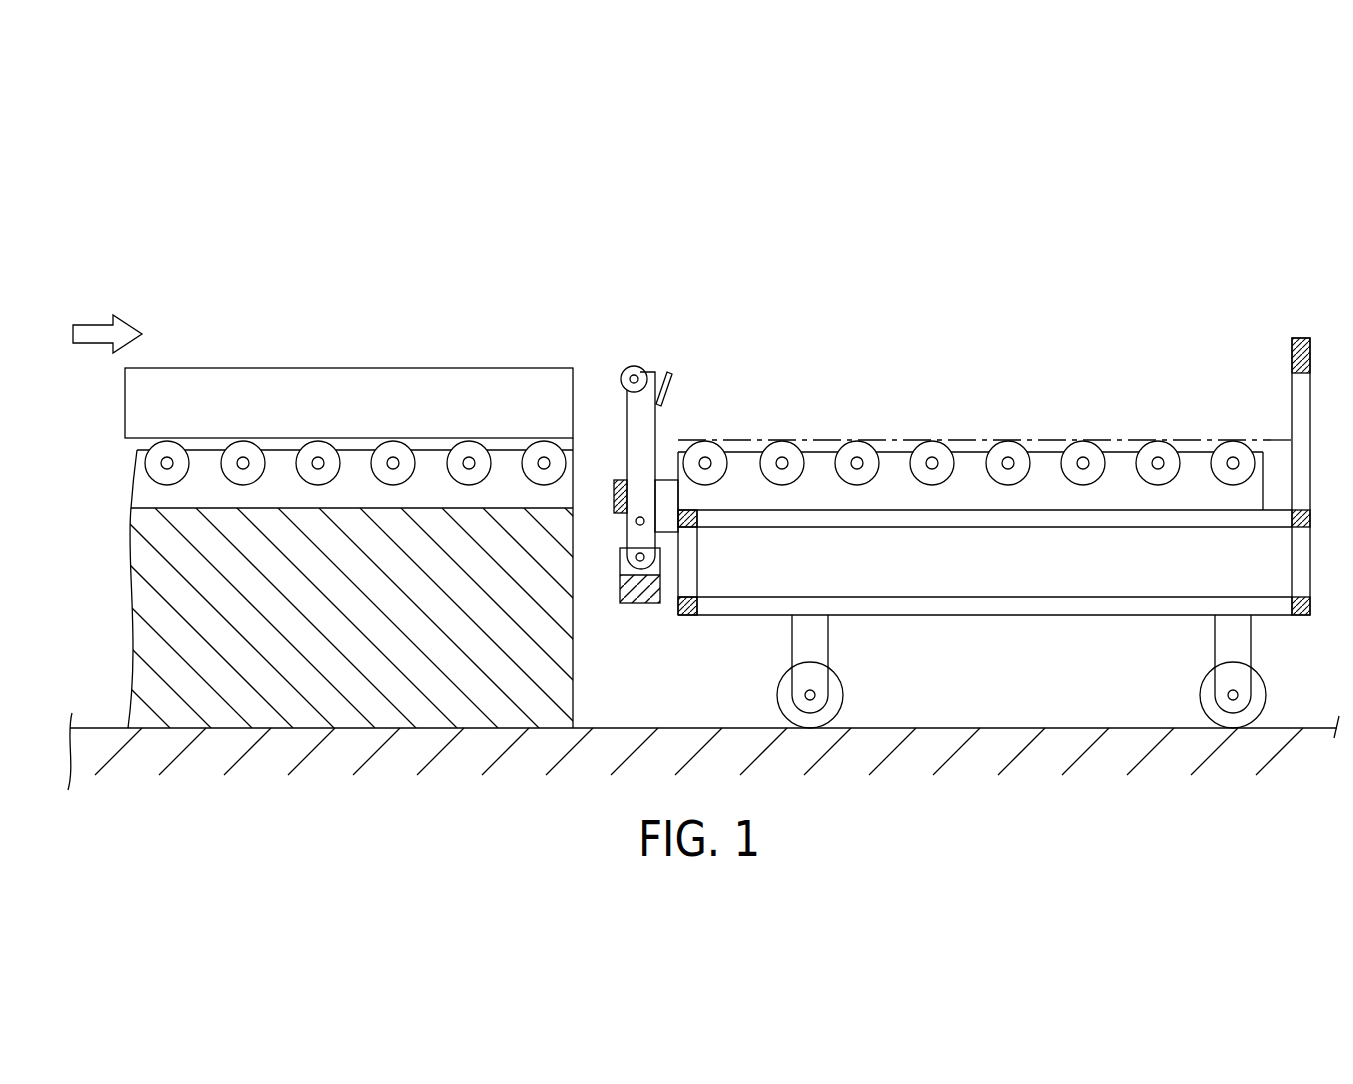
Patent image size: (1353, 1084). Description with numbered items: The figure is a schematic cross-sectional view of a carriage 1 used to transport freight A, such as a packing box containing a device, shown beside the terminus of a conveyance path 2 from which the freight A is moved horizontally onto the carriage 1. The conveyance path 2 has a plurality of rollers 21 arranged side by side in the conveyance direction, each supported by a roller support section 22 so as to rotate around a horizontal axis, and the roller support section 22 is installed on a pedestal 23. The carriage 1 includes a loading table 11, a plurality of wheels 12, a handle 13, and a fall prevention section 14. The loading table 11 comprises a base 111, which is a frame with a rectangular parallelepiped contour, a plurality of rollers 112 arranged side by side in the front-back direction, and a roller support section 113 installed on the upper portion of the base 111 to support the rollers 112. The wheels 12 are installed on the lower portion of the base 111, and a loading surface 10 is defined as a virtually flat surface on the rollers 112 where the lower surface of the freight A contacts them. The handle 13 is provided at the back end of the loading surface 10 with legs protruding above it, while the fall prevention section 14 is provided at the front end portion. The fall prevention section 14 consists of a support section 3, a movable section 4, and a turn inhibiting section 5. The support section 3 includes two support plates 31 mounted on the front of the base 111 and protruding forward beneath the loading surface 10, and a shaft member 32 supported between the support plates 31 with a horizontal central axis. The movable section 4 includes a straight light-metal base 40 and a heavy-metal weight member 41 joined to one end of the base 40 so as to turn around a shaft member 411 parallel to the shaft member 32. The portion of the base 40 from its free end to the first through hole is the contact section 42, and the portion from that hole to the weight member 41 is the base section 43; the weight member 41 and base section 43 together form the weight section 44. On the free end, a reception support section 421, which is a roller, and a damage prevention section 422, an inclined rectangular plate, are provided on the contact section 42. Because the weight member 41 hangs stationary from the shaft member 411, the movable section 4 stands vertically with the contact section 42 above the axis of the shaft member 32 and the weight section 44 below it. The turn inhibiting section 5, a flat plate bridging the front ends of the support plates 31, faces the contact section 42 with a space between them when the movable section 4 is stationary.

The carriage 1 is at (994, 432).
The loading surface 10 is at (985, 474).
The loading table 11 is at (985, 577).
The base 111 is at (1068, 605).
The rollers 112 is at (782, 452).
The roller support section 113 is at (818, 465).
The wheels 12 is at (830, 693).
The handle 13 is at (1298, 385).
The fall prevention section 14 is at (612, 351).
The conveyance path 2 is at (392, 520).
The rollers 21 is at (167, 440).
The roller support section 22 is at (145, 500).
The pedestal 23 is at (143, 590).
The support section 3 is at (669, 494).
The support plates 31 is at (706, 443).
The shaft member 32 is at (636, 524).
The movable section 4 is at (696, 394).
The base 40 is at (696, 467).
The weight member 41 is at (636, 604).
The shaft member 411 is at (650, 576).
The contact section 42 is at (708, 394).
The reception support section 421 is at (631, 368).
The damage prevention section 422 is at (667, 374).
The base section 43 is at (682, 605).
The weight section 44 is at (611, 598).
The turn inhibiting section 5 is at (617, 492).
The freight A is at (437, 370).